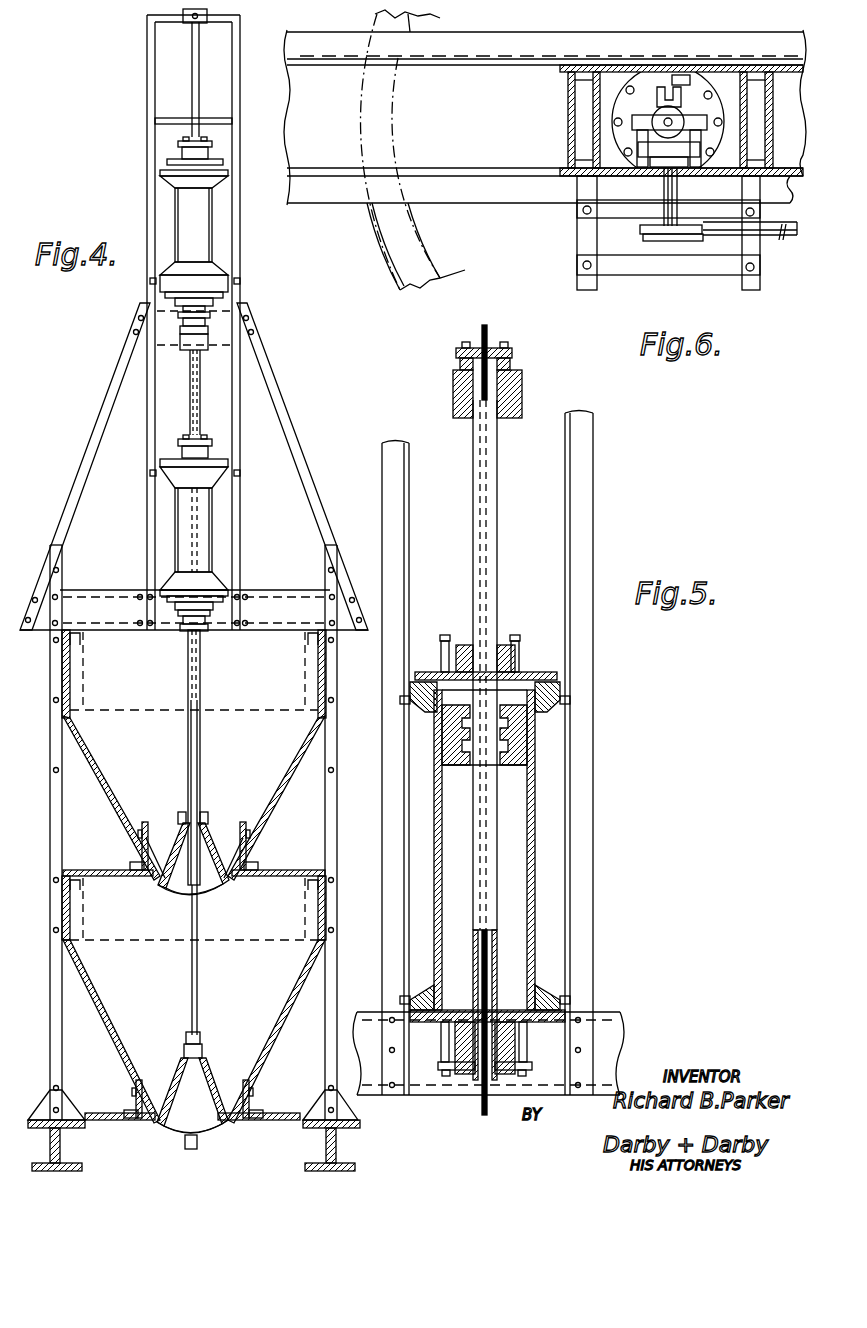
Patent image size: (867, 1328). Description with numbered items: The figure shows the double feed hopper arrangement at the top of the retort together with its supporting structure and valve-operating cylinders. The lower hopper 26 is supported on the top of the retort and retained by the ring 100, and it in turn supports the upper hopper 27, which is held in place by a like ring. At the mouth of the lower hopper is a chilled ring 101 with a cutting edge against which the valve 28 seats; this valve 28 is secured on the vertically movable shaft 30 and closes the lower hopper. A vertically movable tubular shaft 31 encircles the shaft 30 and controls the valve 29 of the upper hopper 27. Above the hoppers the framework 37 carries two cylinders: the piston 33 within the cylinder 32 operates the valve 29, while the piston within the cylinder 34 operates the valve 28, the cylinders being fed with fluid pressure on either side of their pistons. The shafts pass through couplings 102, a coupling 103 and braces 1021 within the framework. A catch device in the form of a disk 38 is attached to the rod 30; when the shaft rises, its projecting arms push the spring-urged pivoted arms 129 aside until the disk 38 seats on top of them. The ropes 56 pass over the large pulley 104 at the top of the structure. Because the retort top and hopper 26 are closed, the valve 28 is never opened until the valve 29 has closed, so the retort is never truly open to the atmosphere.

In FIG. 4, the hopper 26 is at (270, 1046).
In FIG. 4, the hopper 27 is at (268, 806).
In FIG. 6, the hopper 27 is at (440, 262).
In FIG. 4, the valve 28 is at (212, 1132).
In FIG. 4, the valve 29 is at (176, 896).
In FIG. 4, the shaft 30 is at (190, 88).
In FIG. 5, the shaft 30 is at (488, 340).
In FIG. 6, the shaft 30 is at (676, 118).
In FIG. 4, the shaft 31 is at (203, 790).
In FIG. 5, the shaft 31 is at (480, 903).
In FIG. 4, the cylinder 32 is at (215, 529).
In FIG. 5, the cylinder 32 is at (540, 932).
In FIG. 5, the piston 33 is at (535, 737).
In FIG. 4, the cylinder 34 is at (200, 221).
In FIG. 6, the cylinder 34 is at (648, 80).
In FIG. 4, the framework 37 is at (150, 135).
In FIG. 5, the framework 37 is at (590, 888).
In FIG. 6, the framework 37 is at (595, 138).
In FIG. 6, the catch device 38 is at (660, 116).
In FIG. 6, the ropes 56 is at (780, 240).
In FIG. 4, the ring 100 is at (136, 850).
In FIG. 4, the ring 101 is at (236, 860).
In FIG. 4, the coupling 102 is at (212, 158).
In FIG. 5, the coupling 102 is at (505, 650).
In FIG. 4, the brace 1021 is at (292, 432).
In FIG. 4, the coupling 103 is at (208, 350).
In FIG. 5, the coupling 103 is at (520, 382).
In FIG. 6, the pulley 104 is at (650, 243).
In FIG. 6, the arms 129 is at (745, 142).